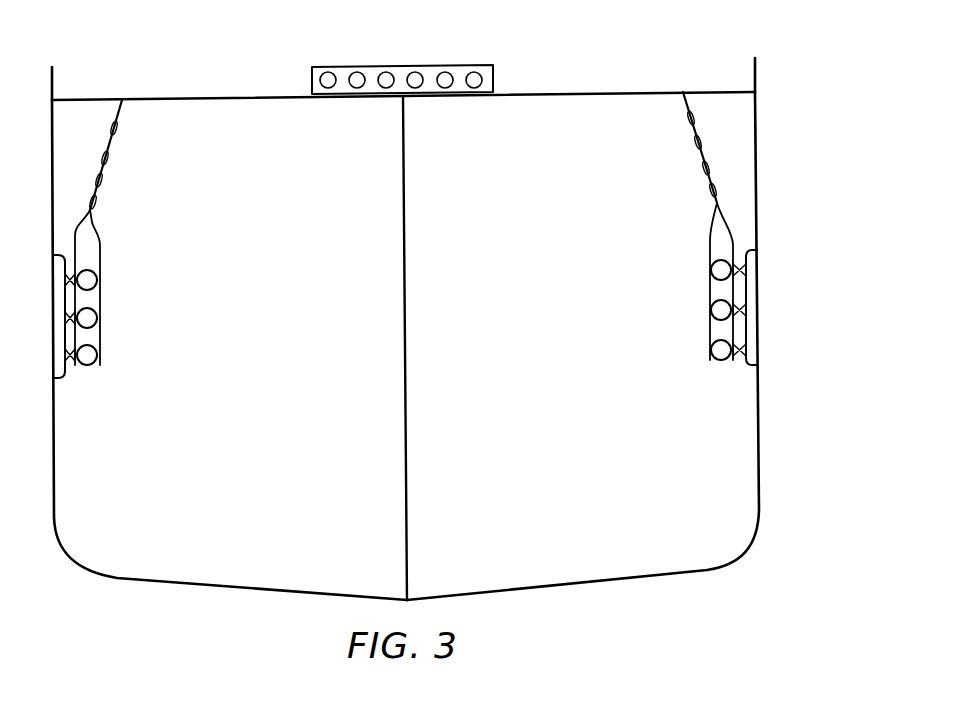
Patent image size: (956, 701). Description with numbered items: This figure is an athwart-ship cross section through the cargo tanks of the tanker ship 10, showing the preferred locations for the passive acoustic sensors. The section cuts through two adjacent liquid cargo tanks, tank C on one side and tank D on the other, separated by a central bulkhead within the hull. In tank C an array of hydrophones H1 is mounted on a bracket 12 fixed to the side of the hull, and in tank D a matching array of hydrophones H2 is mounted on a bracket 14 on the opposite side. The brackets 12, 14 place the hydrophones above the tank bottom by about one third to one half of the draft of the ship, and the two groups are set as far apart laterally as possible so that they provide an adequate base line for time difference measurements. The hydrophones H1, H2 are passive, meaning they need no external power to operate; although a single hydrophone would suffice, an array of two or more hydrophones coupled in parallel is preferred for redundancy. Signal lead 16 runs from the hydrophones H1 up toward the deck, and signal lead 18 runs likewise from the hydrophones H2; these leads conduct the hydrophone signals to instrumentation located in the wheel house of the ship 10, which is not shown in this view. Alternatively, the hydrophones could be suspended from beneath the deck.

The tanker ship 10 is at (571, 61).
The bracket 12 is at (60, 378).
The bracket 14 is at (748, 365).
The signal lead 16 is at (101, 183).
The signal lead 18 is at (705, 169).
The hydrophone H1 is at (97, 280).
The hydrophone H2 is at (711, 270).
The tank C is at (291, 318).
The tank D is at (509, 318).